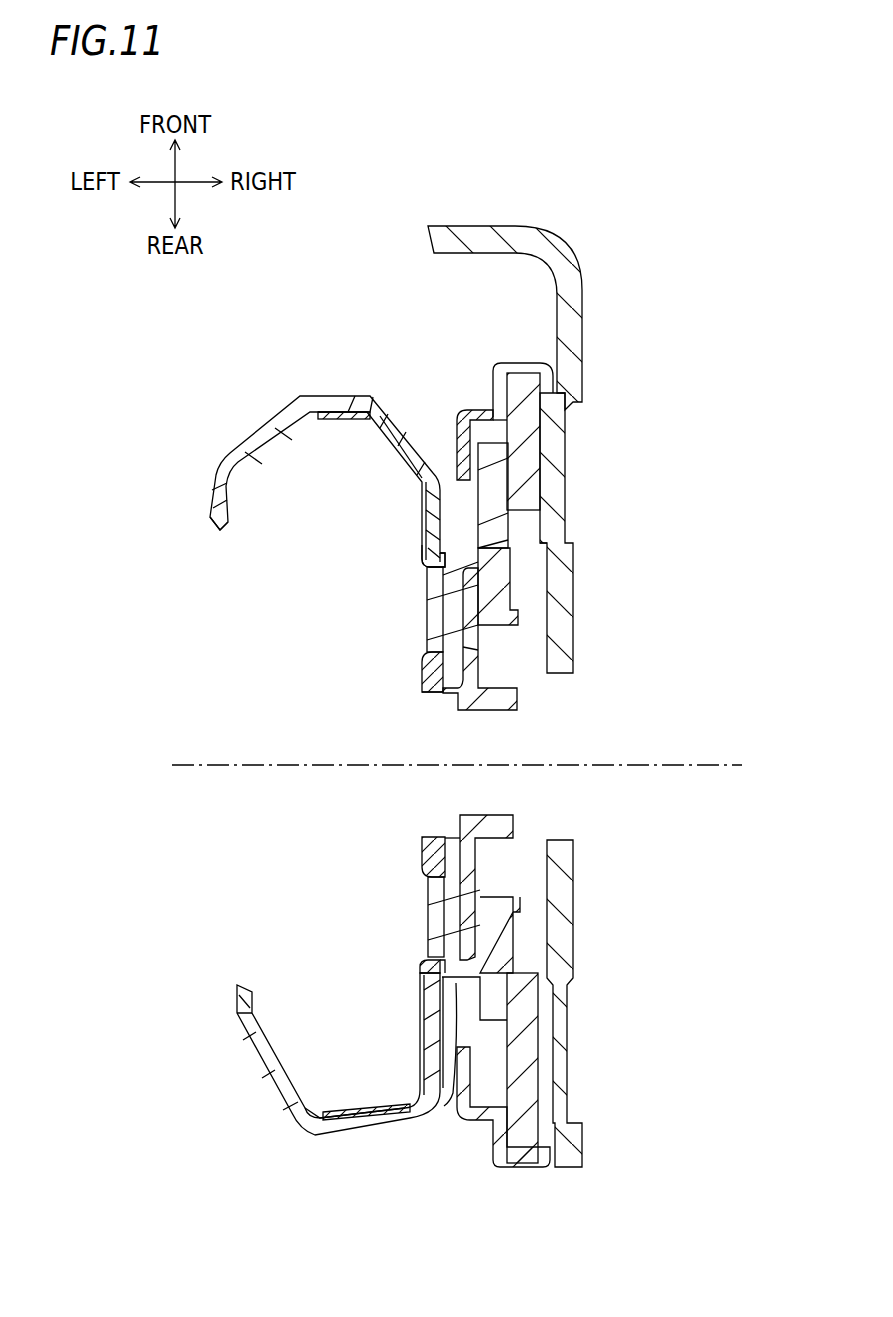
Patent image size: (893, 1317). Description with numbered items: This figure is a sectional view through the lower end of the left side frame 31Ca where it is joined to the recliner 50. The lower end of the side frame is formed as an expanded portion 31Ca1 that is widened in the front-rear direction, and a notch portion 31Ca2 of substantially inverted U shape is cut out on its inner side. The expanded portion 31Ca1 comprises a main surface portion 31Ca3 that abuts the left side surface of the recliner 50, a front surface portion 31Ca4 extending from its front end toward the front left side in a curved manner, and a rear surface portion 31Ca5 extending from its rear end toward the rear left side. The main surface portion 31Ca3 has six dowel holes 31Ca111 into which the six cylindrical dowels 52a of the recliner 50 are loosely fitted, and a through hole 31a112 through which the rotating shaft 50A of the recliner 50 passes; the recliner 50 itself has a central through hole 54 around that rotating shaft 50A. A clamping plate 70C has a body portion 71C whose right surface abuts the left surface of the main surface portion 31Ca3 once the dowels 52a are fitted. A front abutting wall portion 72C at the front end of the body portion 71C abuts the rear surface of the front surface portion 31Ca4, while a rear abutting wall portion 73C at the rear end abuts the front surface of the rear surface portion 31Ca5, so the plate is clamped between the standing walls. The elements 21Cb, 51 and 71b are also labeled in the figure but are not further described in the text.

The housing wall 21Cb is at (478, 226).
The terminal body 51 is at (510, 363).
The recliner 50 is at (466, 410).
The expanded portion 31Ca1 is at (262, 418).
The left side frame 31Ca is at (290, 456).
The front surface portion 31Ca4 is at (345, 397).
The front abutting wall portion 72C is at (403, 472).
The notch portion 31Ca2 is at (225, 532).
The dowel holes 31Ca111 is at (430, 573).
The contact plate 71b is at (433, 600).
The dowel 52a is at (428, 625).
The through hole 31a112 is at (435, 694).
The through hole 54 is at (485, 713).
The rotating shaft 50A is at (683, 768).
The clamping plate 70C is at (422, 850).
The body portion 71C is at (420, 1013).
The rear abutting wall portion 73C is at (360, 1110).
The main surface portion 31Ca3 is at (449, 1015).
The rear surface portion 31Ca5 is at (377, 1128).